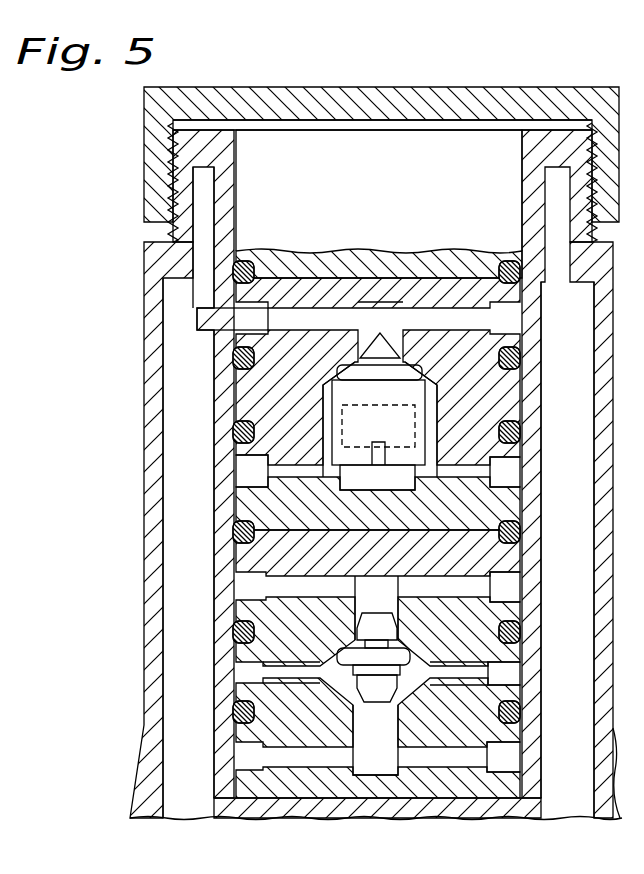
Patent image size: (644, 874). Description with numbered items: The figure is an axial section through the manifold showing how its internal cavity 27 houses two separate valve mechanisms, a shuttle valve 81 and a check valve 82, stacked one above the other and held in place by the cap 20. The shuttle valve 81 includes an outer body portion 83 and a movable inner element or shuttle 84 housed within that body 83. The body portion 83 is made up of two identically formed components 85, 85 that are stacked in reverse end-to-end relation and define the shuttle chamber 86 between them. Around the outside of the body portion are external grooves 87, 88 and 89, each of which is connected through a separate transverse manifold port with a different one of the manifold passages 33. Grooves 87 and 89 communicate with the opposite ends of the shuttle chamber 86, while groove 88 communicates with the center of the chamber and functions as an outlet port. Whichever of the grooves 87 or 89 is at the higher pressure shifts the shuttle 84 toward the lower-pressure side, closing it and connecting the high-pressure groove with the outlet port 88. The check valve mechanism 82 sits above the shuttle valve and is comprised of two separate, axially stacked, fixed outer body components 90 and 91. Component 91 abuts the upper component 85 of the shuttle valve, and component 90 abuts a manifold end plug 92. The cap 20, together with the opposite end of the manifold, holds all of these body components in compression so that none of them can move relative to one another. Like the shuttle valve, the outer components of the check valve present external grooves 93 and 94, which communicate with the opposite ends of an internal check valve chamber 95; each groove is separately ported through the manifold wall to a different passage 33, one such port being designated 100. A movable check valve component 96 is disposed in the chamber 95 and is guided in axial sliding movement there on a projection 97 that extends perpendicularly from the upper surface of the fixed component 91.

The cap 20 is at (355, 87).
The manifold end plug 92 is at (382, 185).
The port 100 is at (220, 308).
The external groove 94 is at (265, 319).
The outer body component 90 is at (268, 380).
The check valve 82 is at (270, 397).
The manifold passages 33 is at (165, 438).
The external groove 93 is at (257, 474).
The outer body component 91 is at (262, 500).
The check valve chamber 95 is at (327, 410).
The movable check valve component 96 is at (378, 422).
The projection 97 is at (377, 477).
The internal cavity 27 is at (510, 482).
The external groove 89 is at (510, 587).
The shuttle valve 81 is at (470, 620).
The body components 85 is at (463, 648).
The external groove 88 is at (510, 672).
The body portion 83 is at (472, 692).
The external groove 87 is at (505, 765).
The shuttle 84 is at (372, 633).
The shuttle chamber 86 is at (345, 688).